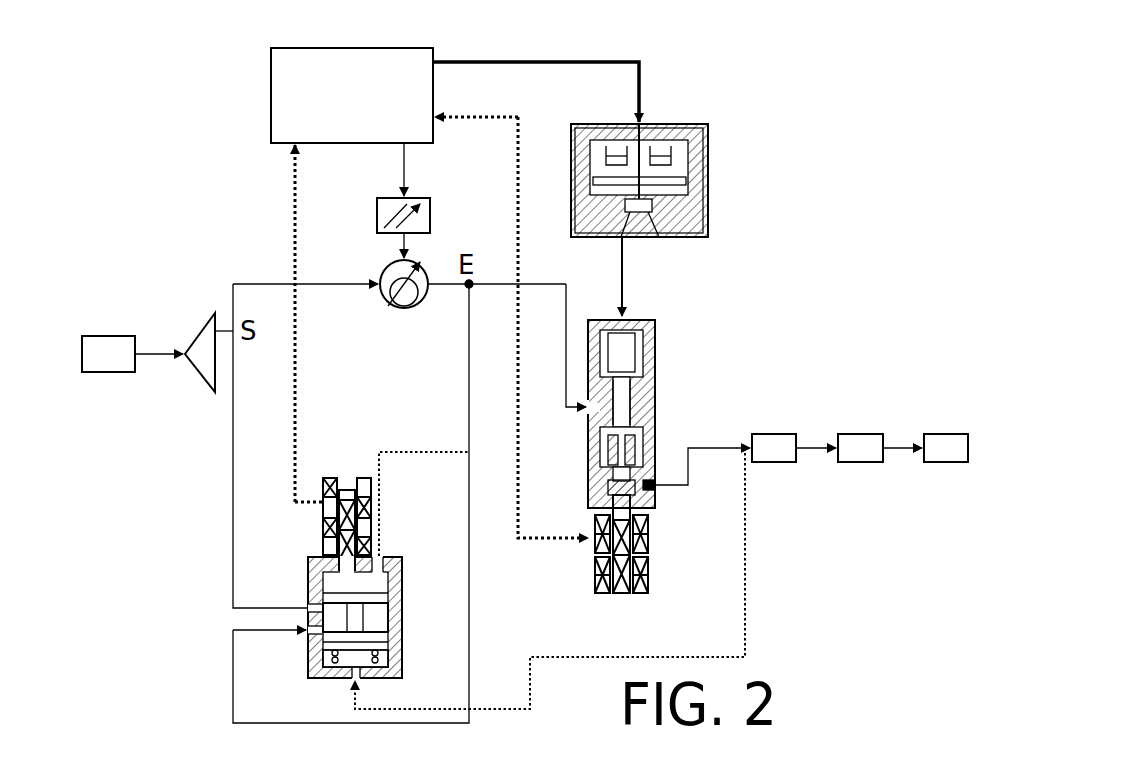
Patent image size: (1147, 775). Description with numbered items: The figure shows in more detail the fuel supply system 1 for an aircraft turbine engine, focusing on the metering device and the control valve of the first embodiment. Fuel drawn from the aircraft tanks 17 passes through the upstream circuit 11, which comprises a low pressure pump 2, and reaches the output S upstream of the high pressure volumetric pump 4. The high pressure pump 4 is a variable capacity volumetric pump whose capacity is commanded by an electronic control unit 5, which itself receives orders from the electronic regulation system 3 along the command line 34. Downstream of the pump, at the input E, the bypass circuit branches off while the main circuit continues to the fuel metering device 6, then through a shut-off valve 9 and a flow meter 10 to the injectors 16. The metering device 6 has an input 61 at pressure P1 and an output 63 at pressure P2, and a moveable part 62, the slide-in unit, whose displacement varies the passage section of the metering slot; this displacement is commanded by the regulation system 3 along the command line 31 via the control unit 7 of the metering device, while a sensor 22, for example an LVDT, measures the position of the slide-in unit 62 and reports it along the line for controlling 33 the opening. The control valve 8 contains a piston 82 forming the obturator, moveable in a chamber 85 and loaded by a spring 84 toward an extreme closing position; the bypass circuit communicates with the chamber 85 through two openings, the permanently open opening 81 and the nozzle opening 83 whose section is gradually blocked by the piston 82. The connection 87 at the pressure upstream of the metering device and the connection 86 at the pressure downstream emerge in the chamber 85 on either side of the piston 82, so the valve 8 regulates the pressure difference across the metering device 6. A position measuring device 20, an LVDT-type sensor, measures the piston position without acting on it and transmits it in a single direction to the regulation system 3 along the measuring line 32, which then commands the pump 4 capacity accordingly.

The supply system 1 is at (808, 95).
The low pressure pump 2 is at (205, 362).
The electronic regulation system 3 is at (271, 74).
The high pressure volumetric pump 4 is at (426, 268).
The electronic control unit 5 is at (431, 214).
The fuel metering device 6 is at (578, 560).
The control unit of the metering device 7 is at (708, 186).
The control valve 8 is at (406, 566).
The shut-off valve 9 is at (784, 432).
The flow meter 10 is at (870, 432).
The upstream circuit 11 is at (152, 352).
The injectors 16 is at (956, 432).
The aircraft tanks 17 is at (94, 360).
The position measuring device 20 is at (364, 477).
The sensor 22 is at (652, 588).
The command line 31 is at (641, 85).
The measuring line 32 is at (292, 168).
The line for controlling the opening of the metering device 33 is at (521, 140).
The command line 34 is at (402, 168).
The input 61 is at (590, 412).
The moveable part 62 is at (622, 402).
The output 63 is at (656, 490).
The opening 81 is at (308, 645).
The piston 82 is at (382, 641).
The opening 83 is at (309, 606).
The spring 84 is at (384, 652).
The chamber 85 is at (382, 616).
The connection 86 is at (352, 680).
The connection 87 is at (382, 557).